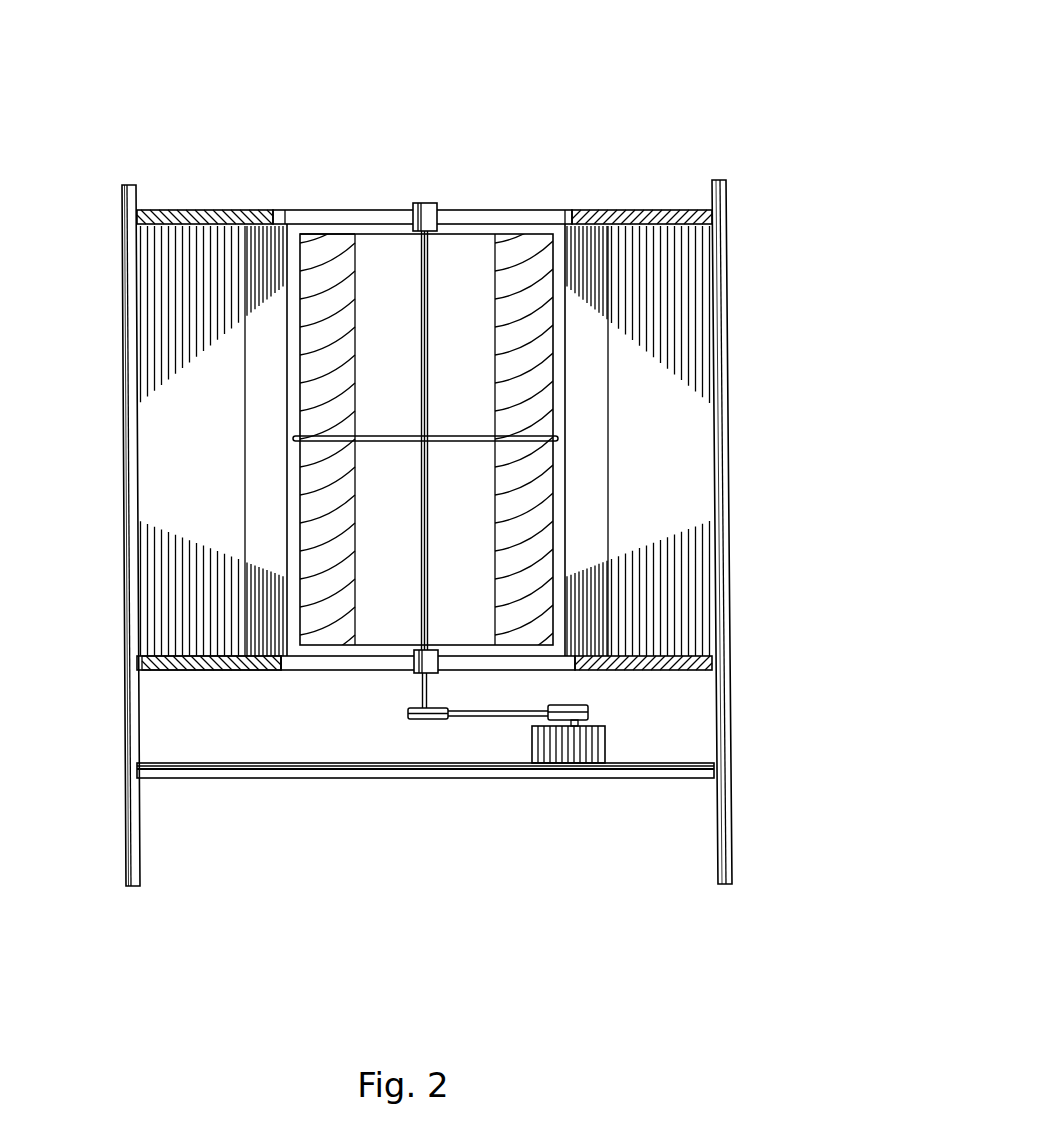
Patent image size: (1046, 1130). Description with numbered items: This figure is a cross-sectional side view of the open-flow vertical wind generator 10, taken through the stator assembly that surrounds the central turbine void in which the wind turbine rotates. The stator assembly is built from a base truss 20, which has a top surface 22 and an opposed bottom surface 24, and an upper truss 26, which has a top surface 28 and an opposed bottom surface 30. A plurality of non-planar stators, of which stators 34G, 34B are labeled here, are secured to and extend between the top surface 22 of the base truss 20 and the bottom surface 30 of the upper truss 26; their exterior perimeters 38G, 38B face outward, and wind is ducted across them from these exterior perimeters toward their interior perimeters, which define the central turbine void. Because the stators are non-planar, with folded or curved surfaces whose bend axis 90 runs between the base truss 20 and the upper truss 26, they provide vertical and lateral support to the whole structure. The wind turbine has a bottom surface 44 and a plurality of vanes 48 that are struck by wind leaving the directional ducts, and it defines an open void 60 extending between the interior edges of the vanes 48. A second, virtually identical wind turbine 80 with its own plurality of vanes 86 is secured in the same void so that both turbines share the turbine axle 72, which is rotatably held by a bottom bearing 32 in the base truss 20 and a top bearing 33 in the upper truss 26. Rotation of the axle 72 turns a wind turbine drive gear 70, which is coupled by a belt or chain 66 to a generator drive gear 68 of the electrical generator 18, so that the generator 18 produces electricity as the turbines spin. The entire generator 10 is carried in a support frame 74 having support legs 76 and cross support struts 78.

The open-flow vertical wind generator 10 is at (677, 97).
The electrical generator 18 is at (598, 742).
The base truss 20 is at (212, 671).
The top surface of the base truss 22 is at (163, 671).
The bottom surface of the base truss 24 is at (250, 671).
The upper truss 26 is at (268, 212).
The top surface of the upper truss 28 is at (222, 211).
The bottom surface of the upper truss 30 is at (625, 210).
The bottom bearing 32 is at (440, 670).
The top bearing 33 is at (428, 203).
The non-planar stator 34G is at (178, 413).
The non-planar stator 34B is at (675, 441).
The exterior perimeter of the stator 38G is at (130, 238).
The exterior perimeter of the stator 38B is at (722, 238).
The bottom surface of the wind turbine 44 is at (380, 436).
The vanes 48 is at (522, 252).
The open void 60 is at (380, 264).
The belt or chain 66 is at (512, 717).
The generator drive gear 68 is at (590, 710).
The wind turbine drive gear 70 is at (428, 718).
The central axle 72 is at (430, 518).
The support frame 74 is at (757, 725).
The support legs 76 is at (126, 556).
The cross support struts 78 is at (350, 779).
The second wind turbine 80 is at (386, 652).
The vanes of the second wind turbine 86 is at (322, 576).
The bend axis 90 is at (240, 503).